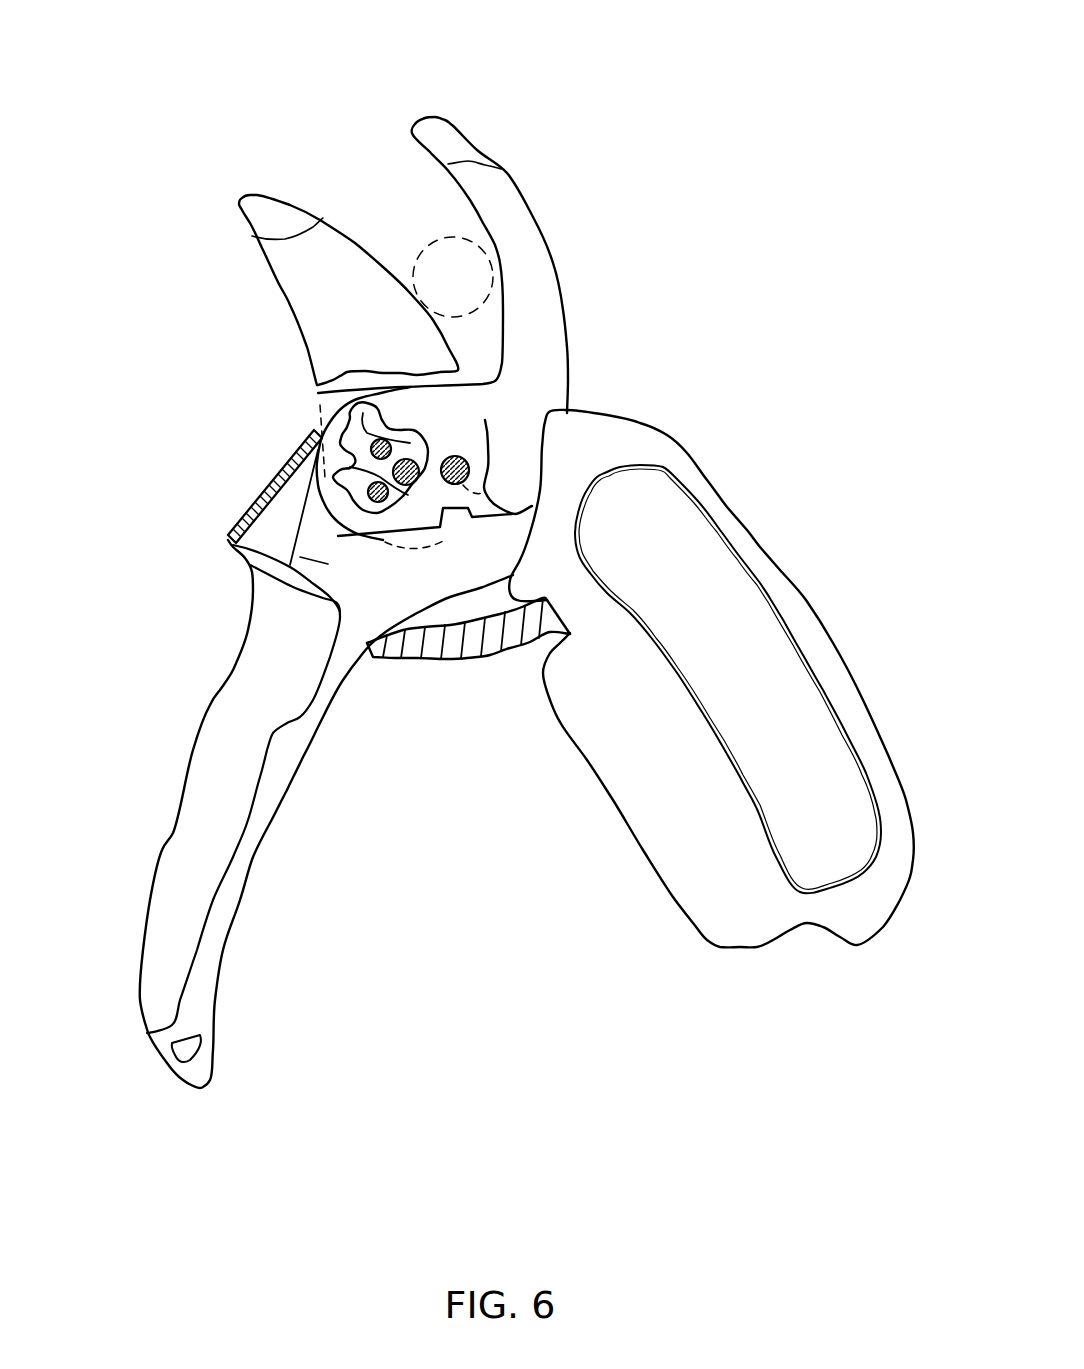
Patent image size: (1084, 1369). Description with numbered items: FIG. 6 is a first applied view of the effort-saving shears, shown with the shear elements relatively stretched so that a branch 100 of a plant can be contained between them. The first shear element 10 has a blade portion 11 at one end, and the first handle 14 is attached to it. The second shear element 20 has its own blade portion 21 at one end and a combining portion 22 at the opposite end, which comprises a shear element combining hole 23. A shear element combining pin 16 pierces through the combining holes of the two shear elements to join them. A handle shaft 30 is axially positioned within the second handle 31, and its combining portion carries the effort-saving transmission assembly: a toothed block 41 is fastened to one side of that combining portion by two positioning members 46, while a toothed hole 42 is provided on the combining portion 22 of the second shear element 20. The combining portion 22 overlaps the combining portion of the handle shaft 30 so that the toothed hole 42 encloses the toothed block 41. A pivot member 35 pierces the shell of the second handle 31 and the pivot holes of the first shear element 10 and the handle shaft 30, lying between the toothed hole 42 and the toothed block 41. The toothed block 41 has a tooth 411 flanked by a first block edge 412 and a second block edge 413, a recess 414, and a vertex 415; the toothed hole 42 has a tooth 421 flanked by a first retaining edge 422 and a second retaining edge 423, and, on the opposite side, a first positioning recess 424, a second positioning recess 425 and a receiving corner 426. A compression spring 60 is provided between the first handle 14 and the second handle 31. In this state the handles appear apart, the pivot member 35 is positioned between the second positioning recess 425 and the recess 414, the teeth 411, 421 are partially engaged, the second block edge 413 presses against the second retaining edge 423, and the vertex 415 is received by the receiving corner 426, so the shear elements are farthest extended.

The first shear element 10 is at (255, 180).
The blade portion 11 is at (264, 237).
The first handle 14 is at (787, 586).
The shear element combining pin 16 is at (470, 470).
The second shear element 20 is at (441, 104).
The blade portion 21 is at (503, 170).
The combining portion 22 is at (317, 385).
The shear element combining hole 23 is at (490, 428).
The handle shaft 30 is at (227, 541).
The second handle 31 is at (190, 797).
The pivot member 35 is at (383, 505).
The toothed block 41 is at (363, 470).
The tooth 411 is at (333, 450).
The first block edge 412 is at (391, 430).
The second block edge 413 is at (252, 601).
The recess 414 is at (303, 458).
The vertex 415 is at (390, 640).
The toothed hole 42 is at (364, 402).
The tooth 421 is at (353, 430).
The first retaining edge 422 is at (417, 430).
The second retaining edge 423 is at (243, 799).
The first positioning recess 424 is at (430, 440).
The second positioning recess 425 is at (427, 520).
The receiving corner 426 is at (363, 540).
The positioning members 46 is at (477, 427).
The compression spring 60 is at (507, 647).
The branch 100 is at (427, 248).